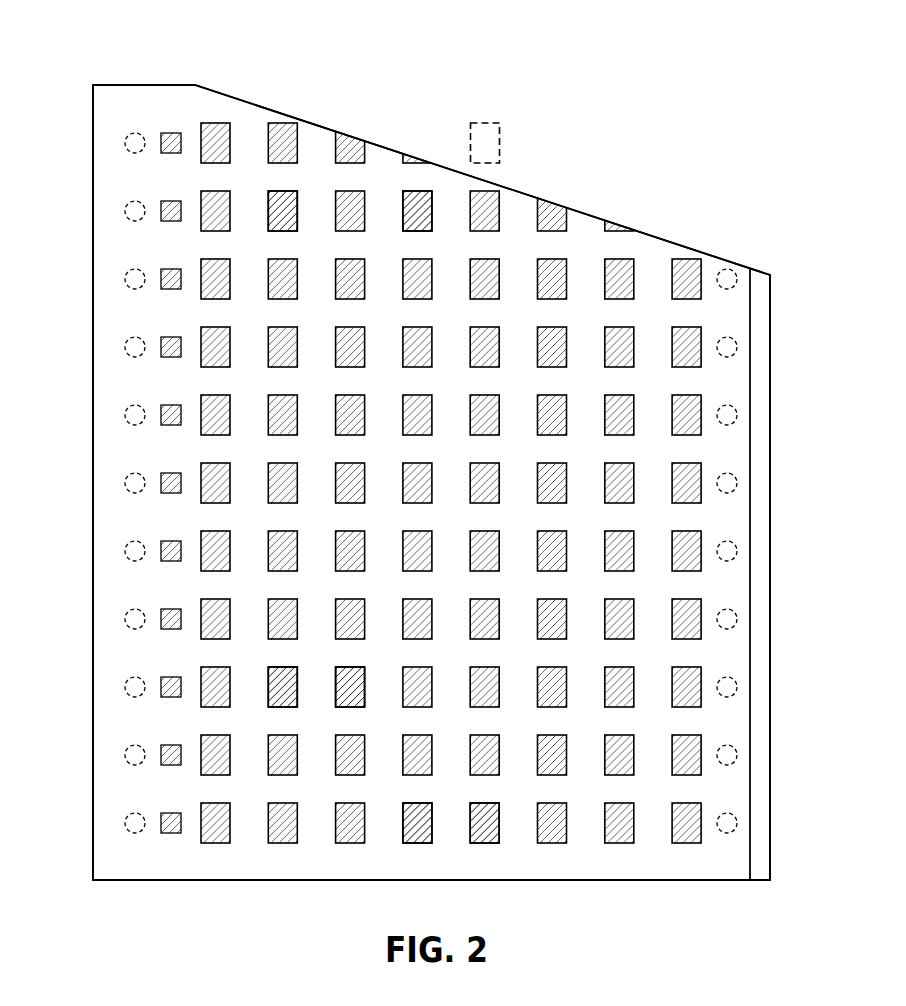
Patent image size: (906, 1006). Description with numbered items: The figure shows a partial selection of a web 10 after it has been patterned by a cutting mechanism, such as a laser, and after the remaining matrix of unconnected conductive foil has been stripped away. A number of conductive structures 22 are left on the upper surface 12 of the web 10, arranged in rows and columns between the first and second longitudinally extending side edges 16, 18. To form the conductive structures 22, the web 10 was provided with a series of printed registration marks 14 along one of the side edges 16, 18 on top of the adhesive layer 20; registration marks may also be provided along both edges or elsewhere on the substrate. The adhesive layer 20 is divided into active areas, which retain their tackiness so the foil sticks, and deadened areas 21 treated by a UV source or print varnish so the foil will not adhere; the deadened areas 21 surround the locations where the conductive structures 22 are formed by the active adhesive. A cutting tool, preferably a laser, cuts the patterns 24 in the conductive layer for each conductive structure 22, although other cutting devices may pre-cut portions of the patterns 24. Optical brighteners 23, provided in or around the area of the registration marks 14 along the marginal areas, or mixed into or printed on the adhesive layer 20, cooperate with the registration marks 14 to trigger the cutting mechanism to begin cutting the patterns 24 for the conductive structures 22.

The web 10 is at (574, 167).
The upper surface 12 is at (260, 176).
The printed registration marks 14 is at (168, 134).
The first longitudinally extending side edge 16 is at (93, 118).
The second longitudinally extending side edge 18 is at (770, 310).
The adhesive layer 20 is at (137, 133).
The deadened areas 21 is at (220, 110).
The conductive structures 22 is at (297, 210).
The optical brighteners 23 is at (480, 123).
The patterns 24 is at (297, 688).